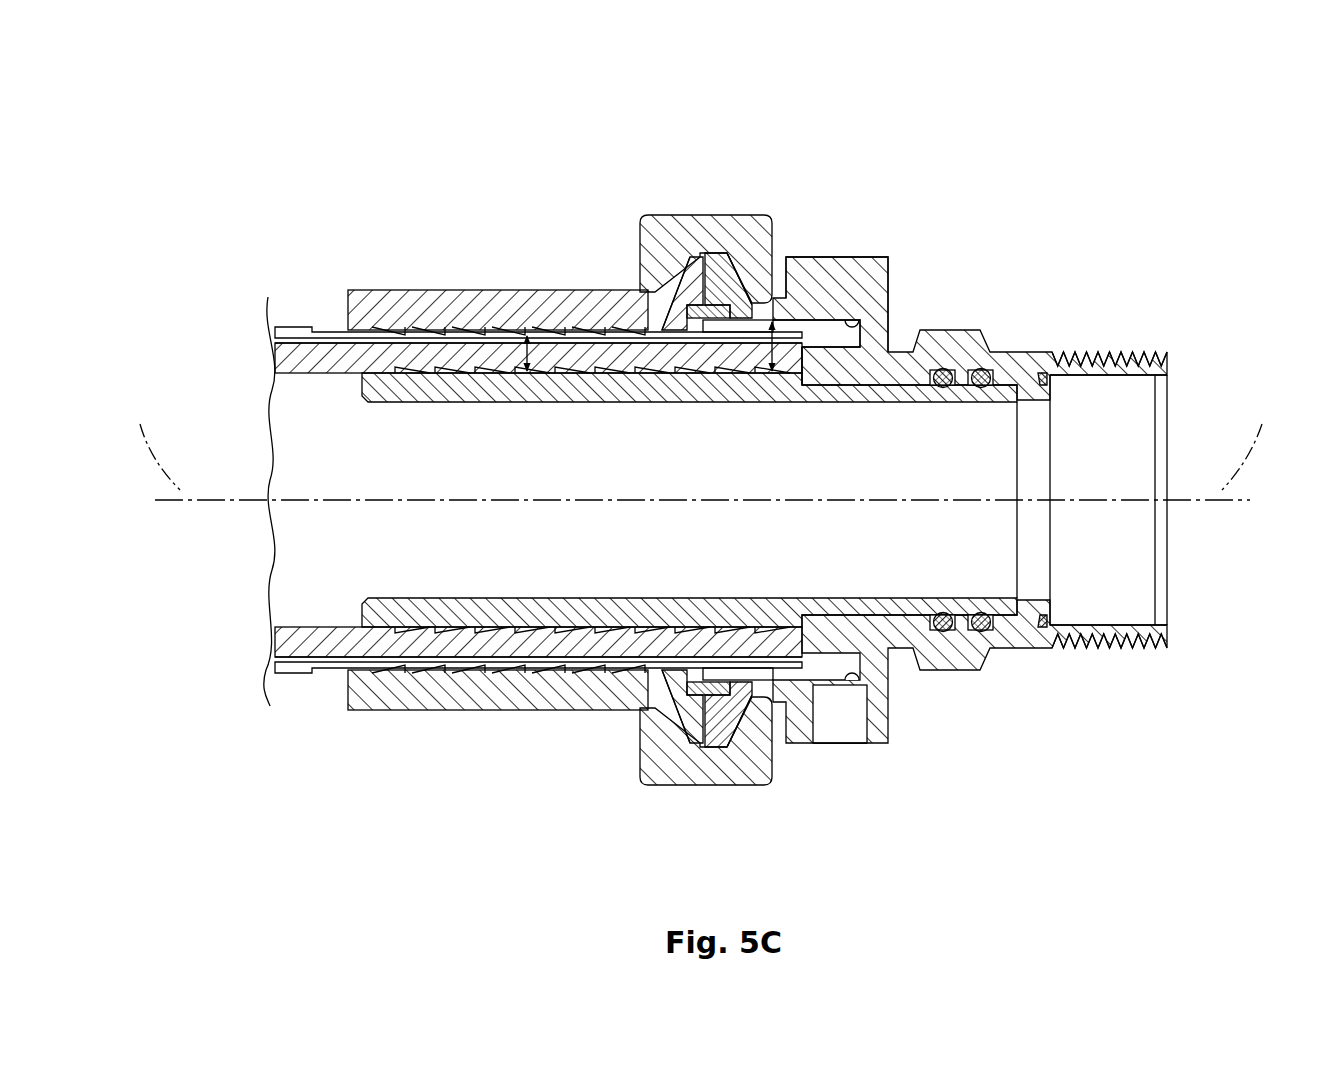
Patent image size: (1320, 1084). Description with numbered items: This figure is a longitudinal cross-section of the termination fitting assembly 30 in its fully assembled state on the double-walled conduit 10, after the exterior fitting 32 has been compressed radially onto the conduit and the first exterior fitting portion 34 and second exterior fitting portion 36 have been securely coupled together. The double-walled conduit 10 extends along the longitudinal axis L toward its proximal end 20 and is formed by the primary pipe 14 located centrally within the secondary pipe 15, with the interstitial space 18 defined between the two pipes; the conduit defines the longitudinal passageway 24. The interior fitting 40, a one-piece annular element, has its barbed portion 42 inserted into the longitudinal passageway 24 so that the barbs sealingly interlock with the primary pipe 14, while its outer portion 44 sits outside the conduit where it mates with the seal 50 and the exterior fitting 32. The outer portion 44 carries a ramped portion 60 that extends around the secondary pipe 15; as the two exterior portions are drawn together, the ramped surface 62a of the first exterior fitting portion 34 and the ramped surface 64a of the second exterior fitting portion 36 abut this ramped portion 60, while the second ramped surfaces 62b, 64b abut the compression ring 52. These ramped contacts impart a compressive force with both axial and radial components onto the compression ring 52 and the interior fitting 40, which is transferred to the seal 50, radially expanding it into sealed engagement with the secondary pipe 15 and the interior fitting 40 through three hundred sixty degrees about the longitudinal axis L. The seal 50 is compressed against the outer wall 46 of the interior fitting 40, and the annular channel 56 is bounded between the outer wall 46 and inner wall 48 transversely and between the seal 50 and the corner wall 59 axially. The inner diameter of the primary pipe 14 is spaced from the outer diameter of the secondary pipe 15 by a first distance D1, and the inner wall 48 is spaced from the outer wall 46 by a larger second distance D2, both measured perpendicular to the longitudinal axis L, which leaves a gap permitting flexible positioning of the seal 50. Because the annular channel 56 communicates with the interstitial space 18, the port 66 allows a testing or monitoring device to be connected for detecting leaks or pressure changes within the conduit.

The double-walled conduit 10 is at (258, 350).
The primary pipe 14 is at (285, 605).
The secondary pipe 15 is at (292, 325).
The interstitial space 18 is at (282, 672).
The proximal end 20 is at (1186, 327).
The longitudinal passageway 24 is at (994, 541).
The termination fitting assembly 30 is at (512, 156).
The exterior fitting 32 is at (694, 190).
The first exterior fitting portion 34 is at (664, 212).
The second exterior fitting portion 36 is at (678, 788).
The interior fitting 40 is at (898, 259).
The barbed portion 42 is at (470, 395).
The outer portion 44 is at (832, 256).
The outer wall 46 is at (845, 330).
The inner wall 48 is at (797, 356).
The seal 50 is at (702, 322).
The compression ring 52 is at (680, 290).
The annular channel 56 is at (868, 720).
The corner wall 59 is at (856, 680).
The ramped portion 60 is at (720, 249).
The ramped surface 62a is at (742, 262).
The second ramped surface 62b is at (686, 292).
The ramped surface 64a is at (740, 728).
The second ramped surface 64b is at (690, 712).
The port 66 is at (858, 746).
The first distance D1 is at (532, 378).
The second distance D2 is at (777, 372).
The longitudinal axis L is at (699, 447).